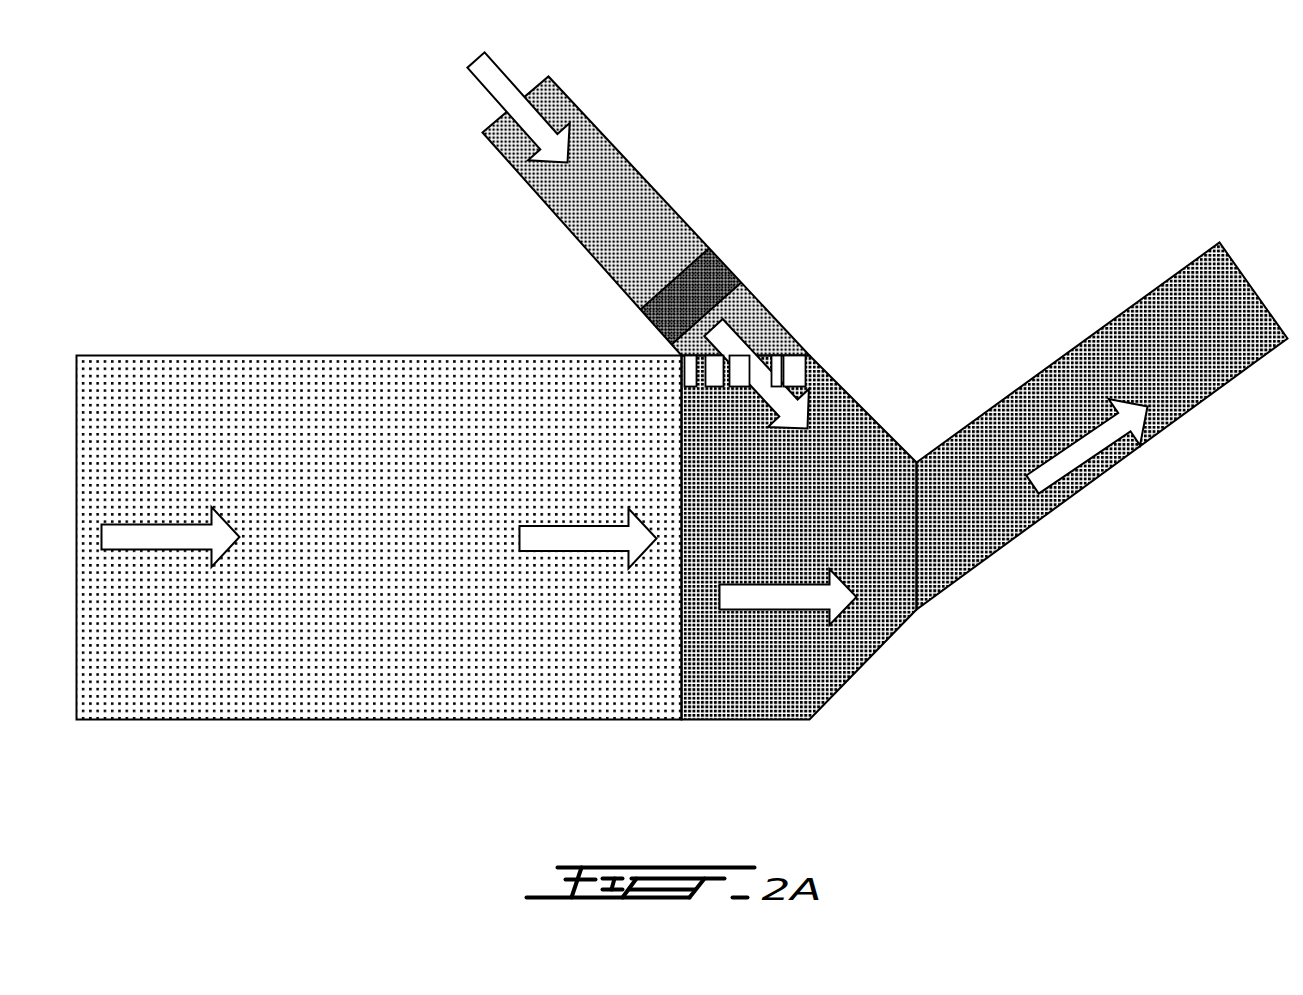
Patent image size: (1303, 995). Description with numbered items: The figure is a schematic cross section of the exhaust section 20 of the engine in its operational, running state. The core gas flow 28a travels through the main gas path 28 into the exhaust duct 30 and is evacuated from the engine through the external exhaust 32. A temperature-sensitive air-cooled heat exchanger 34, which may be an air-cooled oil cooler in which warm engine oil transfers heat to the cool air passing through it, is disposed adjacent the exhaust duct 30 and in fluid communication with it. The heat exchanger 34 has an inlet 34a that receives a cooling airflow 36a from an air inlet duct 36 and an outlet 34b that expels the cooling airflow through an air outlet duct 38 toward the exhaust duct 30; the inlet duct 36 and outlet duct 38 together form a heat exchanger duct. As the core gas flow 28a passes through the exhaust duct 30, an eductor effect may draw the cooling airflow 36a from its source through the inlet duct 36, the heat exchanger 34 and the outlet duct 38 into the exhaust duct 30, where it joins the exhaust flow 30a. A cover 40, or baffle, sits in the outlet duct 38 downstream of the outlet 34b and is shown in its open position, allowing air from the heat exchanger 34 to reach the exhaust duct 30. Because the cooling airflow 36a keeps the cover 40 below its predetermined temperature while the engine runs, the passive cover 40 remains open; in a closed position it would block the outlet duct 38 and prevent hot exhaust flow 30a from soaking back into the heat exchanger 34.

The exhaust section 20 is at (1020, 157).
The main gas path 28 is at (302, 655).
The core gas flow 28a is at (160, 533).
The exhaust duct 30 is at (757, 672).
The exhaust flow 30a is at (1095, 445).
The external exhaust 32 is at (972, 520).
The air-cooled heat exchanger 34 is at (683, 247).
The inlet 34a is at (665, 282).
The outlet 34b is at (722, 297).
The air inlet duct 36 is at (642, 160).
The cooling airflow 36a is at (494, 85).
The air outlet duct 38 is at (793, 323).
The cover 40 is at (797, 370).